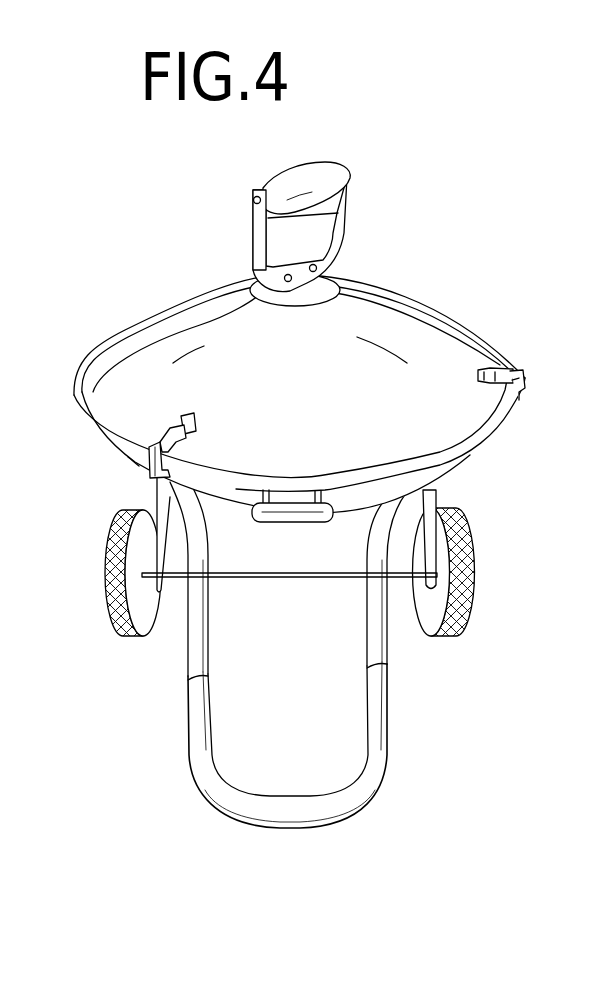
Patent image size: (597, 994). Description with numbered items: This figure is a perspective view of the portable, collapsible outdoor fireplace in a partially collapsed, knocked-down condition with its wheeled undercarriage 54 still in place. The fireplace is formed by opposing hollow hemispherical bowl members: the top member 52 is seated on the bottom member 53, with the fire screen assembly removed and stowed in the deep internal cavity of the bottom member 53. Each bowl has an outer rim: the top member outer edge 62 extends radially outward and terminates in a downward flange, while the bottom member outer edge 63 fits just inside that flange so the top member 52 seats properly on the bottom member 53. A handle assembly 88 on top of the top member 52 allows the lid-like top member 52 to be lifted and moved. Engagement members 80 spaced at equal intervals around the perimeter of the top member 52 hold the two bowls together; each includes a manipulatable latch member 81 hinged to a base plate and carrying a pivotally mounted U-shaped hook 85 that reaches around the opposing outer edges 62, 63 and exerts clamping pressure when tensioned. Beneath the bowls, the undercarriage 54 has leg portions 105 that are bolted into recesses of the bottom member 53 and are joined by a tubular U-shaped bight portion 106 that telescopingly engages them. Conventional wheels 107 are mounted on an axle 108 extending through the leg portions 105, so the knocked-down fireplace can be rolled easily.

The top member 52 is at (413, 323).
The bottom member 53 is at (297, 522).
The wheeled undercarriage 54 is at (284, 653).
The top member outer edge 62 is at (500, 413).
The bottom member outer edge 63 is at (440, 470).
The engagement members 80 is at (507, 365).
The latch members 81 is at (147, 440).
The U-shaped hooks 85 is at (138, 468).
The handle assembly 88 is at (352, 178).
The leg portions 105 is at (378, 658).
The tubular U-shaped bight portion 106 is at (376, 749).
The wheels 107 is at (465, 604).
The axle 108 is at (308, 580).